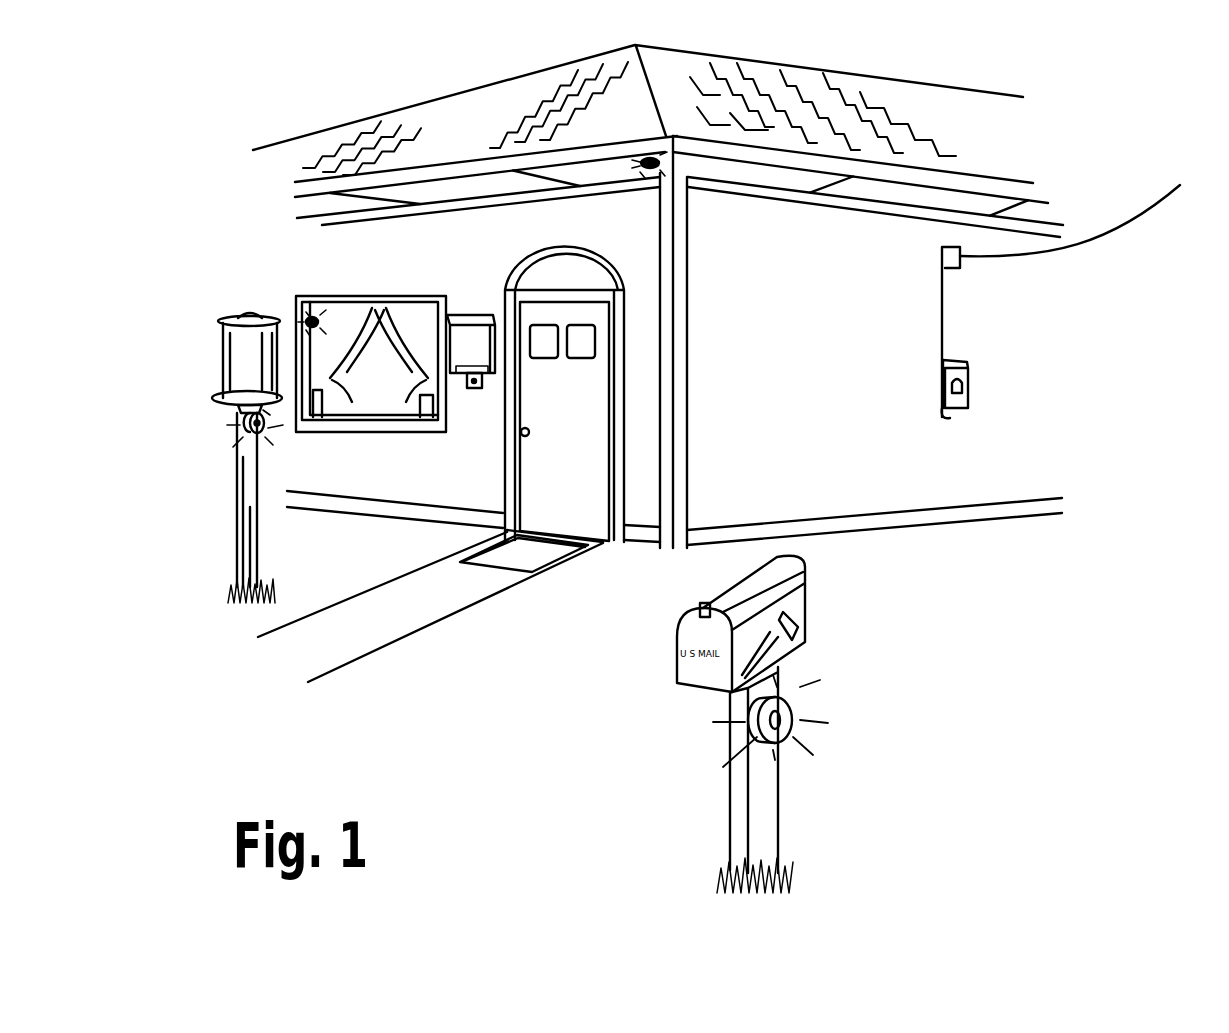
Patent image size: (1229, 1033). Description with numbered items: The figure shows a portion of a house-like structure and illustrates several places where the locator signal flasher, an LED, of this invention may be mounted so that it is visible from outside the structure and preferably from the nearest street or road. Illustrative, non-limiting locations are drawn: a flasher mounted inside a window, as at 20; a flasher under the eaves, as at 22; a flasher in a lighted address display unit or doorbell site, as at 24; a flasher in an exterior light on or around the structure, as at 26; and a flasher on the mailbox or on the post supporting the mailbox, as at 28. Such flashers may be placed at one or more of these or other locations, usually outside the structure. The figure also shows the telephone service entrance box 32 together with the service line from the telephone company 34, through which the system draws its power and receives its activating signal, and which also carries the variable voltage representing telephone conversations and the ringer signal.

The signal flasher mounted inside a window 20 is at (318, 317).
The signal flasher under the eaves 22 is at (638, 173).
The signal flasher in lighted address display unit or doorbell site 24 is at (455, 390).
The signal flasher in exterior light 26 is at (267, 427).
The signal flasher on mailbox or mailbox post 28 is at (792, 713).
The telephone service entrance box 32 is at (970, 390).
The service line from the telephone company 34 is at (1053, 255).